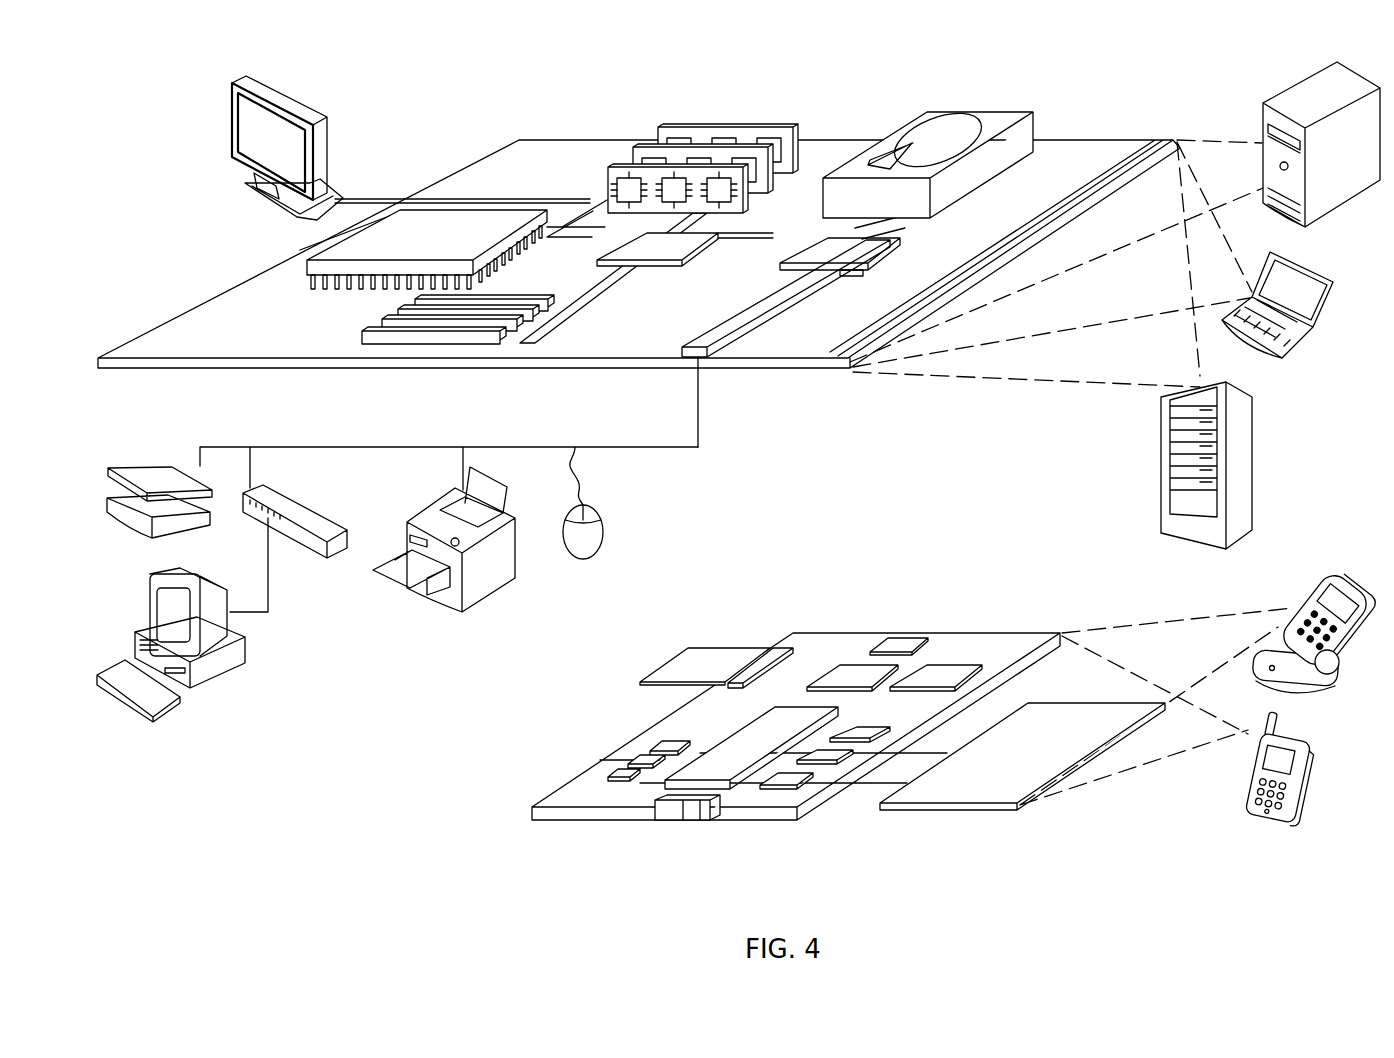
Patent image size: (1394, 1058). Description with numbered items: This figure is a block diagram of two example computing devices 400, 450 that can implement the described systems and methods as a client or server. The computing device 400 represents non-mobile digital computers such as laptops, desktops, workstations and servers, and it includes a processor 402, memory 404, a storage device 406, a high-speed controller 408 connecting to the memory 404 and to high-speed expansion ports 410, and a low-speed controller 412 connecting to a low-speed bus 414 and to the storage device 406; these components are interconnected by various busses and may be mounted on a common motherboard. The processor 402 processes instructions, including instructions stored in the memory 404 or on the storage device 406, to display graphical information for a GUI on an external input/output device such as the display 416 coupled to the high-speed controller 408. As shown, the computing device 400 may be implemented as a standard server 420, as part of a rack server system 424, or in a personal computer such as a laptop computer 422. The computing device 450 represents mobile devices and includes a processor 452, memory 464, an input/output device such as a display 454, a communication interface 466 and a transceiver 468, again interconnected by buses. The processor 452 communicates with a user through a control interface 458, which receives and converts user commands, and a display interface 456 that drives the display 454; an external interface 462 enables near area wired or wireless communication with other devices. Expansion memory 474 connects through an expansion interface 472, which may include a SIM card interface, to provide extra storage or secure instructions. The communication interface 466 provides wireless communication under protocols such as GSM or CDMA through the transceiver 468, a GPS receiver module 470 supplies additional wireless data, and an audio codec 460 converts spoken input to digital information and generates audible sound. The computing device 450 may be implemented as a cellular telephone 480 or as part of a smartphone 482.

The computing device 400 is at (141, 97).
The processor 402 is at (306, 267).
The memory 404 is at (665, 124).
The storage device 406 is at (921, 113).
The high-speed controller 408 is at (637, 250).
The high-speed expansion ports 410 is at (380, 328).
The low-speed controller 412 is at (818, 248).
The low-speed bus 414 is at (708, 352).
The display 416 is at (236, 82).
The standard server 420 is at (1261, 121).
The laptop computer 422 is at (1334, 282).
The rack server system 424 is at (1162, 486).
The computing device 450 is at (507, 815).
The processor 452 is at (722, 773).
The display 454 is at (990, 793).
The display interface 456 is at (795, 780).
The control interface 458 is at (832, 760).
The audio codec 460 is at (865, 735).
The external interface 462 is at (683, 812).
The memory 464 is at (630, 768).
The communication interface 466 is at (852, 675).
The transceiver 468 is at (935, 675).
The GPS receiver module 470 is at (905, 636).
The expansion interface 472 is at (762, 648).
The expansion memory 474 is at (688, 648).
The cellular telephone 480 is at (1318, 556).
The smartphone 482 is at (1248, 775).